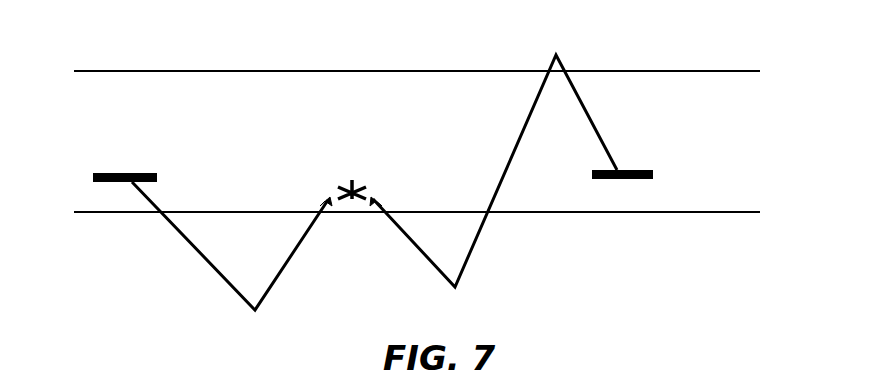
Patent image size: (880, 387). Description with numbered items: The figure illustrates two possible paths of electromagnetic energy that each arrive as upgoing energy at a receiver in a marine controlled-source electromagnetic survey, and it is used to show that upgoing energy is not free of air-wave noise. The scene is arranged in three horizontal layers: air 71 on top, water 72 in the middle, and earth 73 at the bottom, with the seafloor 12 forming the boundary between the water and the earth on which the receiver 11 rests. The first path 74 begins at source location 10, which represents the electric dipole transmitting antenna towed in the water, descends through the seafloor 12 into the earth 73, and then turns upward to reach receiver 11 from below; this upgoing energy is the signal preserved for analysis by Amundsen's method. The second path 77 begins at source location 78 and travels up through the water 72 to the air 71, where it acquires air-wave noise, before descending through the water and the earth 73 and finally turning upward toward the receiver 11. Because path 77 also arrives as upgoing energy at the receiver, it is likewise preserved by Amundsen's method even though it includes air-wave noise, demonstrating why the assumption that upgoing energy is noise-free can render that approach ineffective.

The source location 10 is at (108, 172).
The receiver 11 is at (352, 179).
The seafloor 12 is at (120, 212).
The air 71 is at (809, 43).
The water 72 is at (809, 121).
The earth 73 is at (809, 253).
The path 74 is at (212, 267).
The path 77 is at (476, 243).
The source location 78 is at (638, 170).